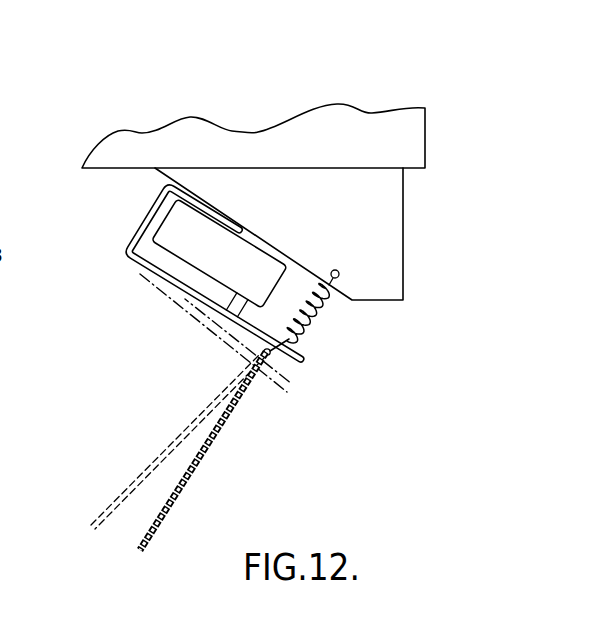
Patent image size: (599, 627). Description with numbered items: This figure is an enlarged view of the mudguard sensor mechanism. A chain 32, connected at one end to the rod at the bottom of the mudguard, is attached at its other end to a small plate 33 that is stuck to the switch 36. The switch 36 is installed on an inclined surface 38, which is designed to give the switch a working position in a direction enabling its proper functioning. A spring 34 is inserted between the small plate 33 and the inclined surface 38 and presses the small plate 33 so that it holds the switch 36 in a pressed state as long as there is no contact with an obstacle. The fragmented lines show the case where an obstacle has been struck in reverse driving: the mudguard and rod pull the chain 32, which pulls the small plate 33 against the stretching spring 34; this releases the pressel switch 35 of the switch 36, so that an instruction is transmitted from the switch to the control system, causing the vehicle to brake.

The chain 32 is at (208, 451).
The small plate 33 is at (135, 263).
The spring 34 is at (311, 315).
The pressel switch 35 is at (213, 414).
The switch 36 is at (184, 215).
The inclined surface 38 is at (300, 197).